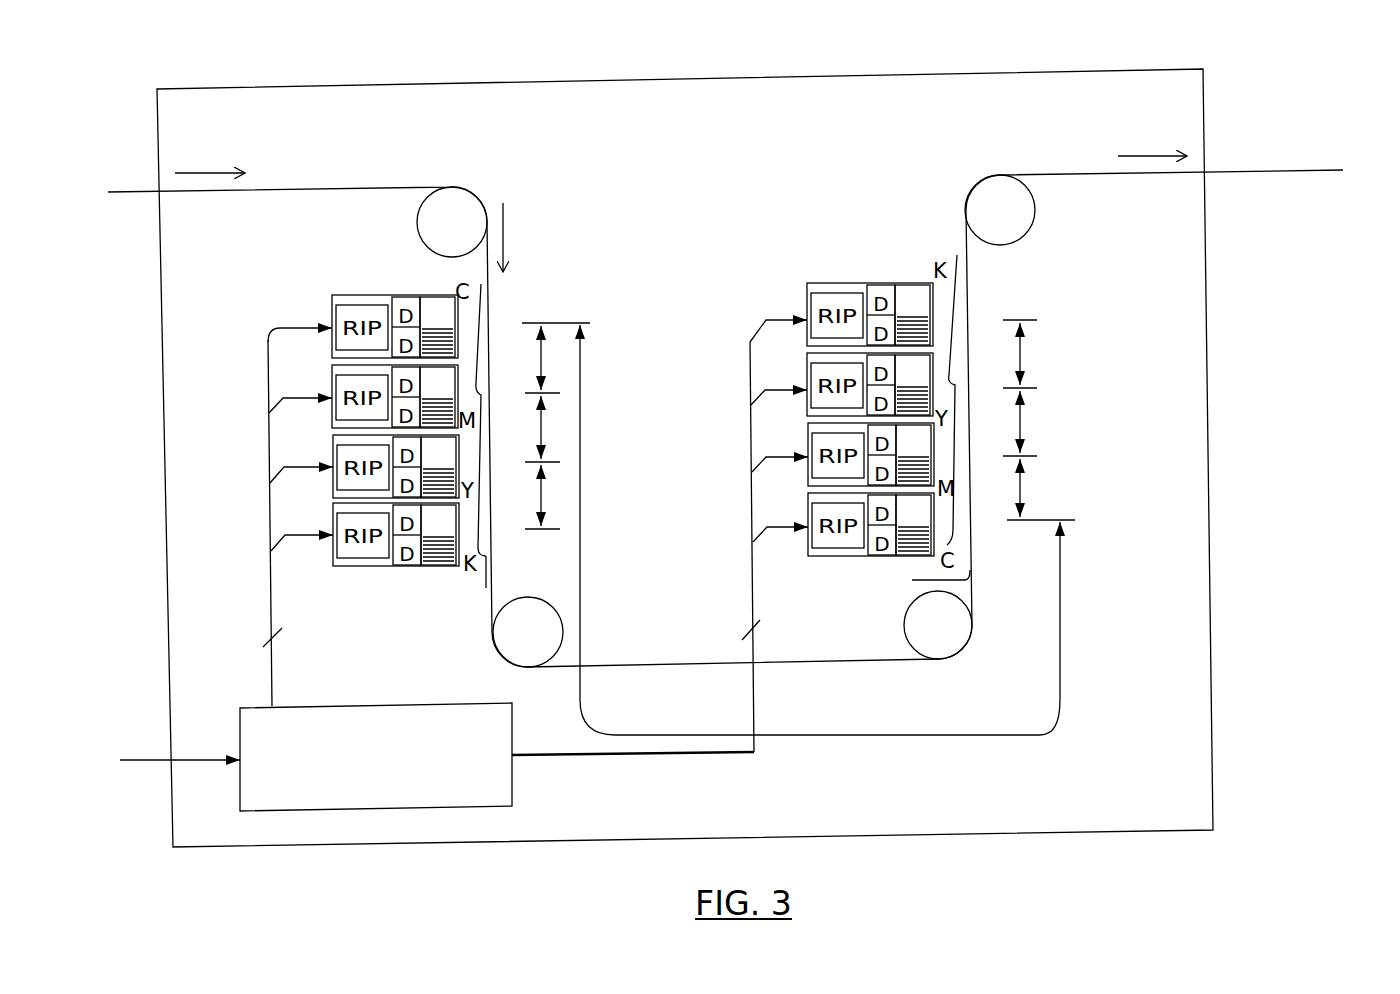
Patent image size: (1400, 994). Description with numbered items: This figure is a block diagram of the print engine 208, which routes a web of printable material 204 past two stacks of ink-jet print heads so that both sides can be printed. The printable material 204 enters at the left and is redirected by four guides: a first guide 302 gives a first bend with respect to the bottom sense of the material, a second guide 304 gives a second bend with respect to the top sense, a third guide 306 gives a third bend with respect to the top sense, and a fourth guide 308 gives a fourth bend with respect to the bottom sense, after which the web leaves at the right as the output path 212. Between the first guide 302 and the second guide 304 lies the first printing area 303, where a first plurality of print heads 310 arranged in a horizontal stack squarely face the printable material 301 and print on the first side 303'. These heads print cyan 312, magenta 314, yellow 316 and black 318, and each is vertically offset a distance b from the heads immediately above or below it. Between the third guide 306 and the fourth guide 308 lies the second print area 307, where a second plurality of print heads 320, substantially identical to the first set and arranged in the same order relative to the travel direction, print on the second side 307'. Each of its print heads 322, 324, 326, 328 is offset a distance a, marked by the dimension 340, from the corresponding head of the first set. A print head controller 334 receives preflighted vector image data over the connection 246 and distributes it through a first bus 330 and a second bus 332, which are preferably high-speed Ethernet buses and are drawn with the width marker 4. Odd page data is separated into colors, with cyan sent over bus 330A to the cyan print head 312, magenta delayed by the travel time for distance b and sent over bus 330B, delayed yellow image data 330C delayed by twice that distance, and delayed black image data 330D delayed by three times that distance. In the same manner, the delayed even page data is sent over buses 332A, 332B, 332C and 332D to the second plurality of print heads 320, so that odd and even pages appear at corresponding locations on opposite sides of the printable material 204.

The print engine 208 is at (277, 82).
The printable material 204 is at (140, 192).
The web output path 212 is at (1292, 170).
The printable material 301 is at (510, 232).
The first guide 302 is at (470, 234).
The second guide 304 is at (546, 644).
The third guide 306 is at (956, 637).
The fourth guide 308 is at (1018, 222).
The first plurality of print heads 310 is at (352, 291).
The cyan print head 312 is at (345, 352).
The magenta print head 314 is at (345, 422).
The yellow print head 316 is at (347, 492).
The black print head 318 is at (350, 560).
The second plurality of print heads 320 is at (828, 280).
The print head 322 is at (817, 548).
The print head 324 is at (817, 480).
The print head 326 is at (816, 410).
The print head 328 is at (816, 340).
The first bus 330 is at (270, 604).
The bus 330A is at (320, 328).
The bus 330B is at (320, 398).
The delayed yellow image data 330C is at (322, 467).
The delayed black image data 330D is at (322, 535).
The second bus 332 is at (750, 595).
The bus 332A is at (797, 527).
The bus 332B is at (797, 457).
The bus 332C is at (797, 390).
The bus 332D is at (797, 319).
The print head controller 334 is at (396, 800).
The web path length a between print zones 340 is at (922, 735).
The connection 246 is at (153, 760).
The first printing area 303 is at (447, 409).
The first side 303' is at (448, 589).
The second print area 307 is at (923, 389).
The second side 307' is at (898, 596).
The bus width indicator 4 is at (546, 633).
The distance b is at (797, 424).